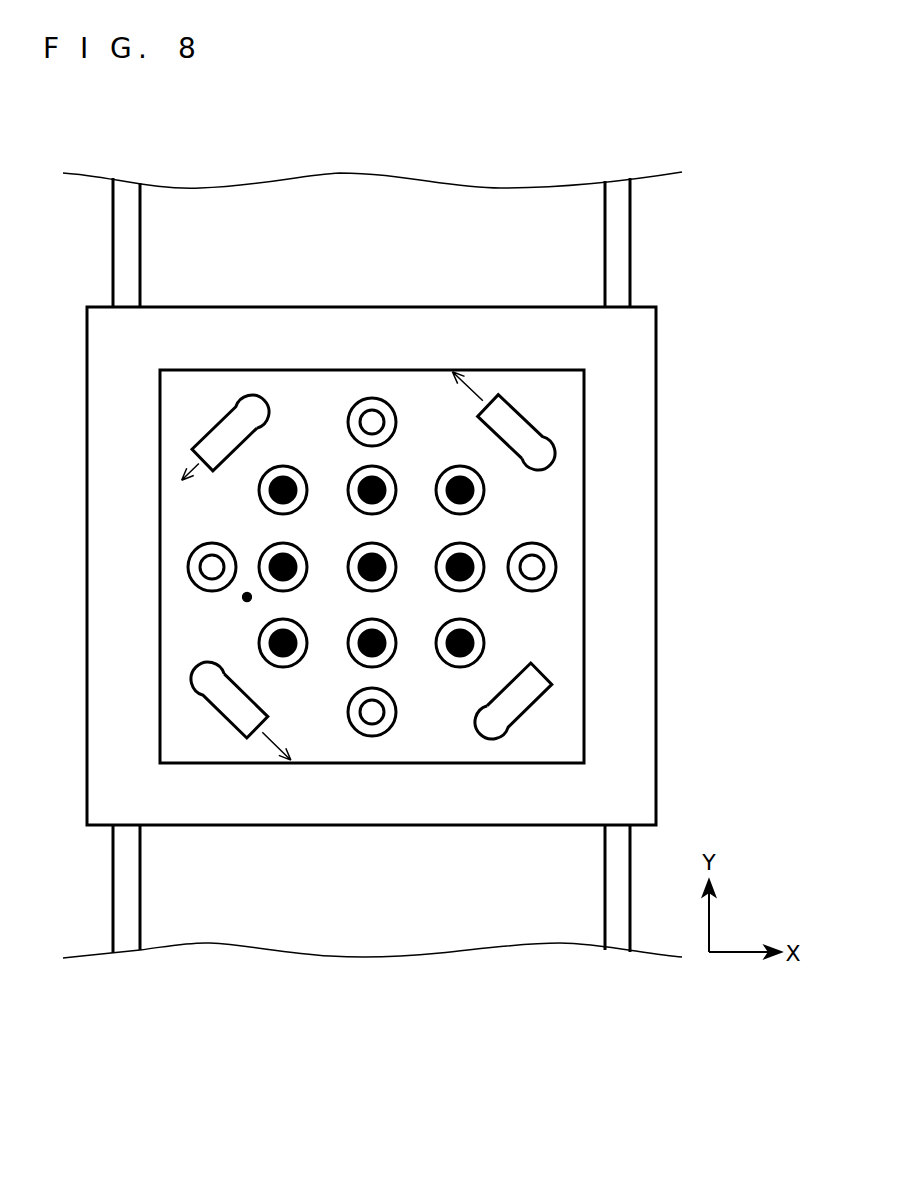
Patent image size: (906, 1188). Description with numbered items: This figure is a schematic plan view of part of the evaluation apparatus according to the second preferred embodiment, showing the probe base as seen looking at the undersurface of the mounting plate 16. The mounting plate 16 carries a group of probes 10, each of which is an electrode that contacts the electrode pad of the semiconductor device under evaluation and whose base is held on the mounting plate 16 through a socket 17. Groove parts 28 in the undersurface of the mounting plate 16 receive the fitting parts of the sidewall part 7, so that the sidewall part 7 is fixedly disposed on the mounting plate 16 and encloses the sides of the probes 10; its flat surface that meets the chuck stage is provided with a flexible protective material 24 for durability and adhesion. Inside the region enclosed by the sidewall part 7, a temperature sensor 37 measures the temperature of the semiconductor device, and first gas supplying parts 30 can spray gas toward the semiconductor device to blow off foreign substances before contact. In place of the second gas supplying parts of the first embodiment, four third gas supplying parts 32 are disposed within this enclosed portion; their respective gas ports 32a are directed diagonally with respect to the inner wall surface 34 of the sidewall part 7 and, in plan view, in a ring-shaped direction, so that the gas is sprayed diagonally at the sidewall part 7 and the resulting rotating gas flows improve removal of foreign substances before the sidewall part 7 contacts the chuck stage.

The sidewall part 7 is at (217, 825).
The probe 10 is at (362, 653).
The mounting plate 16 is at (490, 203).
The socket 17 is at (390, 661).
The protective material 24 is at (500, 803).
The groove part 28 is at (618, 265).
The first gas supplying part 30 is at (191, 573).
The third gas supplying part 32 is at (447, 566).
The gas port 32a is at (543, 663).
The inner wall surface 34 is at (315, 371).
The temperature sensor 37 is at (243, 598).